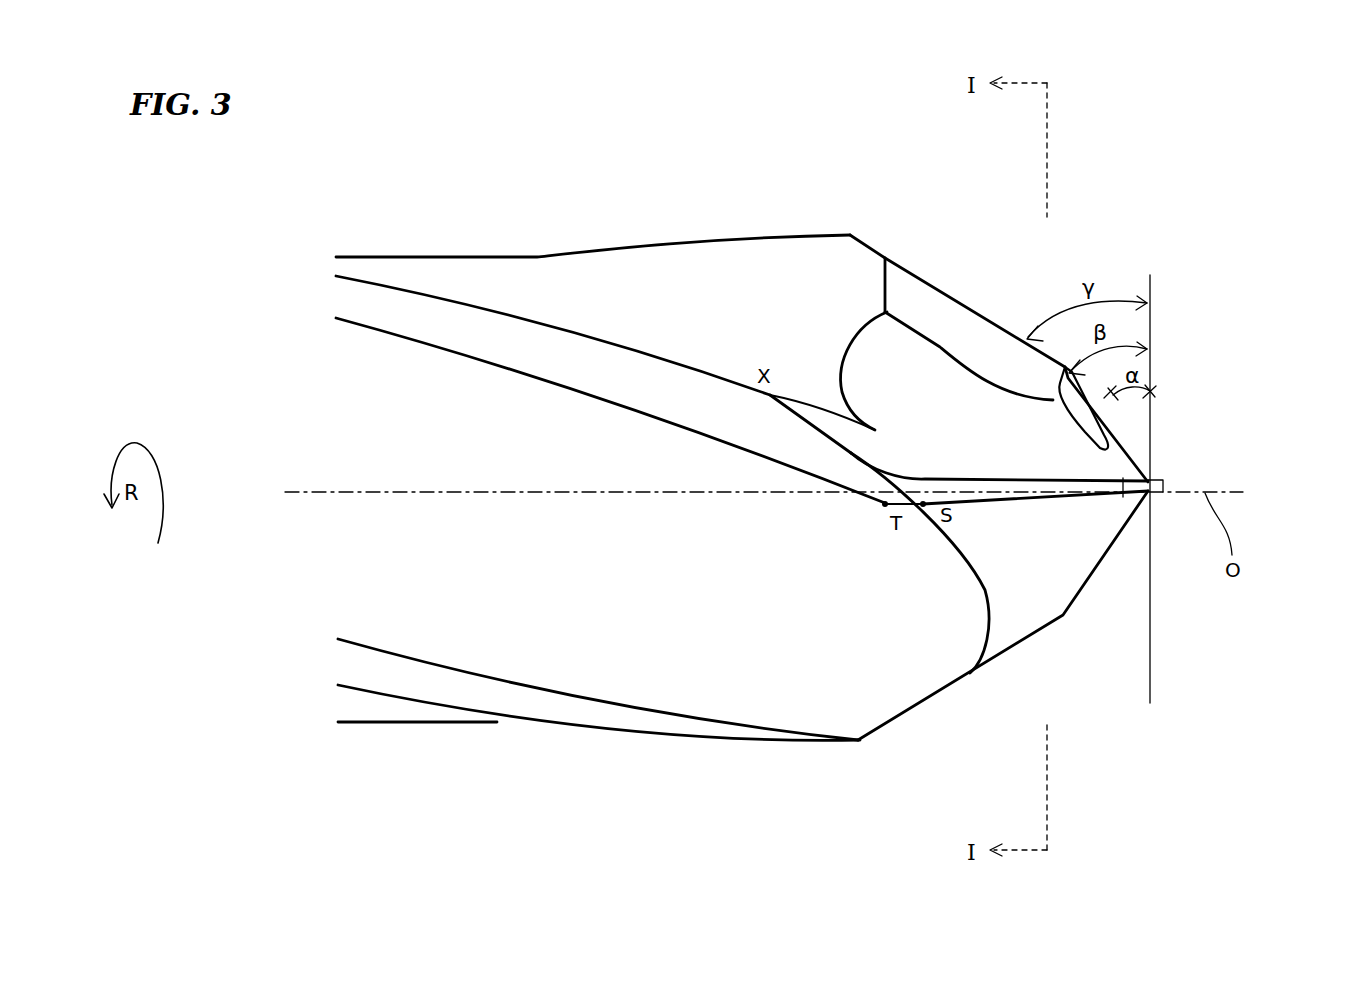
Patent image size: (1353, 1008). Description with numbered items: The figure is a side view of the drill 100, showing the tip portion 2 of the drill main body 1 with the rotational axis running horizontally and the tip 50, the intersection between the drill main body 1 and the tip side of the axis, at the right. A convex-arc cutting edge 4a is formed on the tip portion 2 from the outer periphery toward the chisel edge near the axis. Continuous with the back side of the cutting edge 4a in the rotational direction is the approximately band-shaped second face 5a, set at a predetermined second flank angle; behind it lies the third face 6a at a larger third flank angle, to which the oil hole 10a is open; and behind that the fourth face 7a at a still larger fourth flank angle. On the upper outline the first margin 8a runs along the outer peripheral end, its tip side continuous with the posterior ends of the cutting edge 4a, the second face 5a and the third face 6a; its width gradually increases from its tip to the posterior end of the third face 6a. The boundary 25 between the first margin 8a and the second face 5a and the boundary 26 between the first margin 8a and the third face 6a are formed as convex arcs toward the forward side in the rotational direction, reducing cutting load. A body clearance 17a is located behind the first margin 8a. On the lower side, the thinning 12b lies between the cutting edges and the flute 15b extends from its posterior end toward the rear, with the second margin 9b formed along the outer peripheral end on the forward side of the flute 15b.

The drill main body 1 is at (347, 245).
The tip portion 2 is at (1100, 220).
The drill 100 is at (1230, 173).
The first margin 8a is at (490, 335).
The body clearance 17a is at (648, 297).
The fourth face 7a is at (907, 308).
The third face 6a is at (927, 400).
The oil hole 10a is at (1083, 420).
The second face 5a is at (1122, 500).
The convex-arc cutting edge 4a is at (1020, 500).
The thinning 12b is at (998, 540).
The boundary between first margin and third face 26 is at (805, 430).
The boundary between first margin and second face 25 is at (868, 477).
The second margin 9b is at (468, 693).
The flute 15b is at (603, 625).
The tip 50 is at (1155, 480).